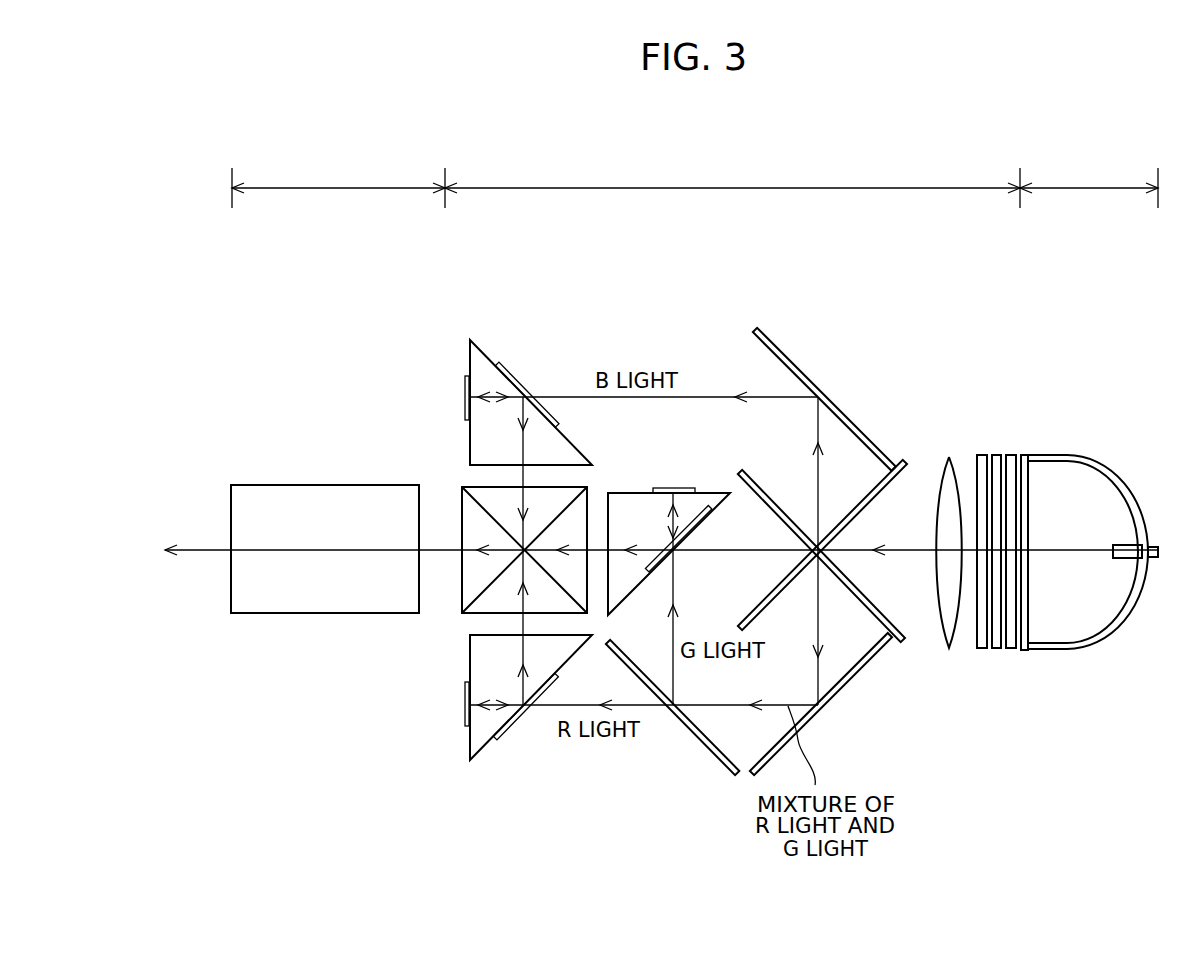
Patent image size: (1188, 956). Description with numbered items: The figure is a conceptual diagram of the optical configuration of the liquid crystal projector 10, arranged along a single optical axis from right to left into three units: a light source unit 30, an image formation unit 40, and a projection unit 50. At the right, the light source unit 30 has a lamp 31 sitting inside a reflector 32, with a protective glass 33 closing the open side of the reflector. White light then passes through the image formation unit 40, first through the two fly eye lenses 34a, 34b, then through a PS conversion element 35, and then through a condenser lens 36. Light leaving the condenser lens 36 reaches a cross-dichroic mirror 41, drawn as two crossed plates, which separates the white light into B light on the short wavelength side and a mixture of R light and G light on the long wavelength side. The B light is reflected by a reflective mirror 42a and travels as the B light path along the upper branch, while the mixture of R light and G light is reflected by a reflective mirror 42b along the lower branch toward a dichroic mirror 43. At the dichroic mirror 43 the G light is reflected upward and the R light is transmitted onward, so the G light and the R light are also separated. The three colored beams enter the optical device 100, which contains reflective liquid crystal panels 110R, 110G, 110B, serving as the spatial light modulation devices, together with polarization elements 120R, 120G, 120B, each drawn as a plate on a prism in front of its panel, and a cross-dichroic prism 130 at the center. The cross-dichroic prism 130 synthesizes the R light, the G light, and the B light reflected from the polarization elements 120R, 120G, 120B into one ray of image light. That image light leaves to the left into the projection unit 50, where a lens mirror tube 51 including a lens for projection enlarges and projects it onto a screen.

The liquid crystal projector 10 is at (810, 135).
The light source unit 30 is at (1089, 184).
The lamp 31 is at (1128, 558).
The reflector 32 is at (1108, 493).
The protective glass 33 is at (1024, 650).
The fly eye lens 34a is at (1011, 455).
The fly eye lens 34b is at (997, 455).
The PS conversion element 35 is at (983, 455).
The condenser lens 36 is at (950, 457).
The image formation unit 40 is at (732, 184).
The cross-dichroic mirror 41 is at (870, 492).
The reflective mirror 42a is at (778, 347).
The reflective mirror 42b is at (845, 685).
The dichroic mirror 43 is at (718, 768).
The projection unit 50 is at (338, 184).
The lens mirror tube 51 is at (337, 612).
The optical device 100 is at (364, 348).
The reflective liquid crystal panel 110B is at (466, 395).
The reflective liquid crystal panel 110G is at (662, 488).
The reflective liquid crystal panel 110R is at (466, 704).
The polarization element 120B is at (515, 380).
The polarization element 120G is at (700, 522).
The polarization element 120R is at (513, 718).
The cross-dichroic prism 130 is at (462, 588).